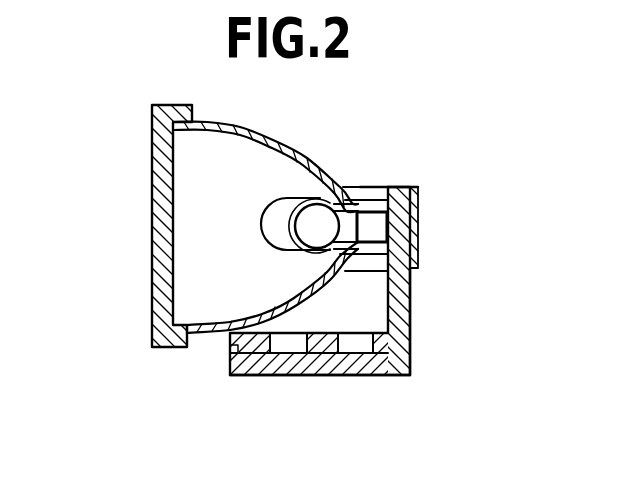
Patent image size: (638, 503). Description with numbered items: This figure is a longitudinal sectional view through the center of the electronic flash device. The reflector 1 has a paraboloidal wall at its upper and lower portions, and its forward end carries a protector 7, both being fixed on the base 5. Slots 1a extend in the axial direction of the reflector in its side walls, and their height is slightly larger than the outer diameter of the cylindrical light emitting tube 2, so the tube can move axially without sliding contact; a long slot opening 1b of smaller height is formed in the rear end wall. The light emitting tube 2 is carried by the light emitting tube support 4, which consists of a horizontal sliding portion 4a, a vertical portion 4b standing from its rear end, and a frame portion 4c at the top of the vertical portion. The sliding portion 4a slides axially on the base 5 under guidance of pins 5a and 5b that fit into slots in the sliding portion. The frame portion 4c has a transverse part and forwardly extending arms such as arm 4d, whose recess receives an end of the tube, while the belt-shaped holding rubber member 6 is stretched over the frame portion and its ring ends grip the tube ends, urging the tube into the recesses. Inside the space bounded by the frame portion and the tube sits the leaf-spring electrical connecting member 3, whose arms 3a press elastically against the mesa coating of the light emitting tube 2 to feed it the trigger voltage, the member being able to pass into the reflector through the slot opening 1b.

The reflector 1 is at (257, 132).
The slots 1a is at (271, 207).
The slot opening 1b is at (371, 223).
The light emitting tube 2 is at (304, 201).
The electrical connecting member 3 is at (419, 199).
The arms 3a is at (343, 186).
The light emitting tube support 4 is at (359, 282).
The sliding portion 4a is at (390, 376).
The vertical portion 4b is at (438, 321).
The frame portion 4c is at (395, 188).
The arm 4d is at (371, 188).
The base 5 is at (278, 376).
The pin 5a is at (250, 352).
The pin 5b is at (322, 376).
The holding rubber member 6 is at (417, 248).
The protector 7 is at (151, 152).